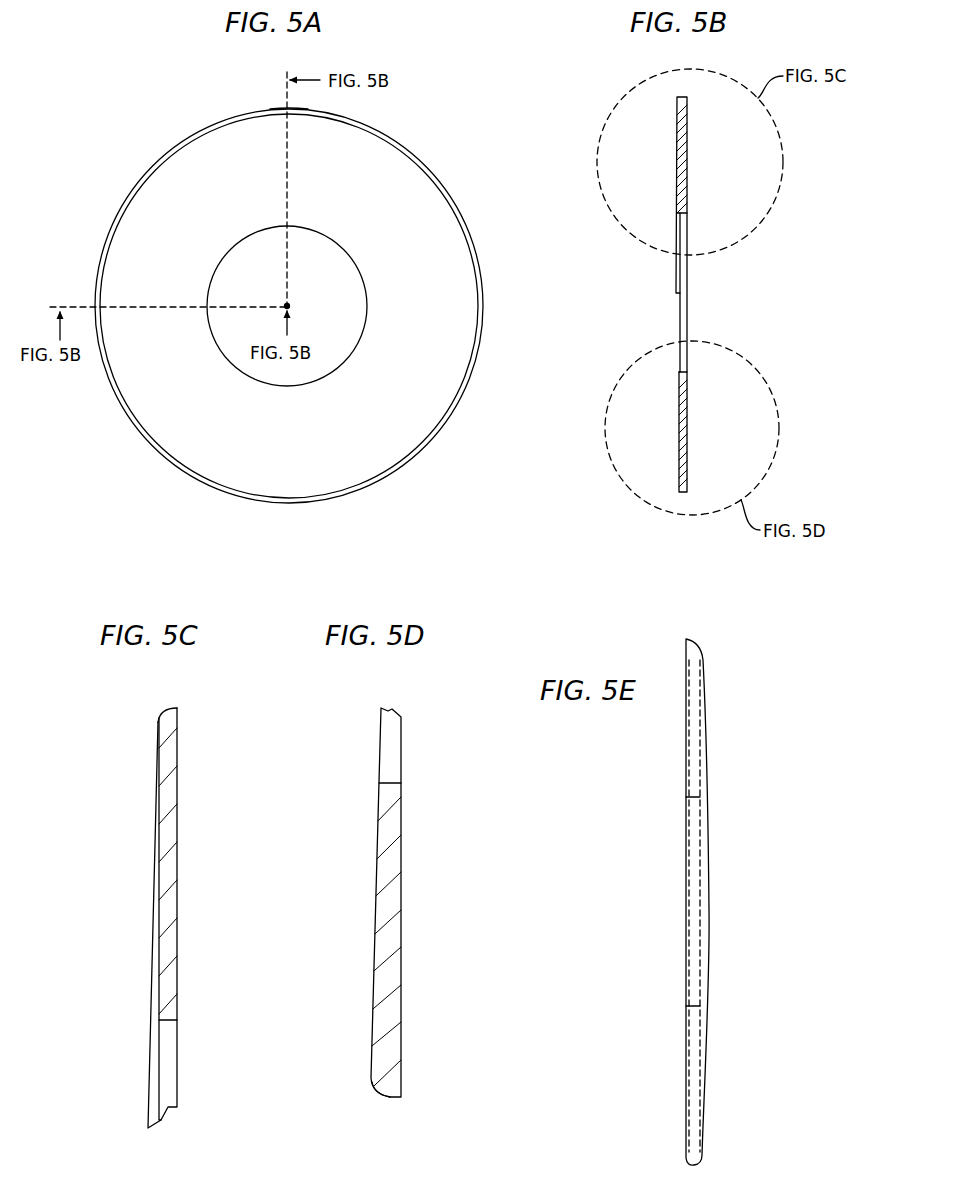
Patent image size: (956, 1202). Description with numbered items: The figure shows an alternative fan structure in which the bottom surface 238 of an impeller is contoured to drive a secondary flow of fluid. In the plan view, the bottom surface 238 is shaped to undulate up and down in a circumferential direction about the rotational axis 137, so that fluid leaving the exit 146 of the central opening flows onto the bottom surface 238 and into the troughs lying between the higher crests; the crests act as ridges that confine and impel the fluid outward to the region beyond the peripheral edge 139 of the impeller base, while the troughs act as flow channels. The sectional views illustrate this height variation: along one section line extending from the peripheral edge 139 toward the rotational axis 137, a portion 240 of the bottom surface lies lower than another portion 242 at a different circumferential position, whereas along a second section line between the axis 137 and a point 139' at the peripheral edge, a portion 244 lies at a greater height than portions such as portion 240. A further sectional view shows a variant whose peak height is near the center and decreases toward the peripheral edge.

In FIG. 5A, the rotational axis 137 is at (290, 307).
In FIG. 5A, the peripheral edge 139 is at (261, 306).
In FIG. 5B, the peripheral edge 139 is at (656, 270).
In FIG. 5C, the peripheral edge 139 is at (143, 701).
In FIG. 5A, the point at the peripheral edge 139' is at (268, 91).
In FIG. 5B, the point at the peripheral edge 139' is at (652, 458).
In FIG. 5D, the point at the peripheral edge 139' is at (361, 1108).
In FIG. 5A, the exit of the central opening 146 is at (330, 237).
In FIG. 5A, the bottom surface 238 is at (433, 220).
In FIG. 5C, the portion of the bottom surface 240 is at (159, 927).
In FIG. 5C, the another portion of the bottom surface 242 is at (150, 1036).
In FIG. 5D, the portion of the bottom surface 244 is at (371, 1058).